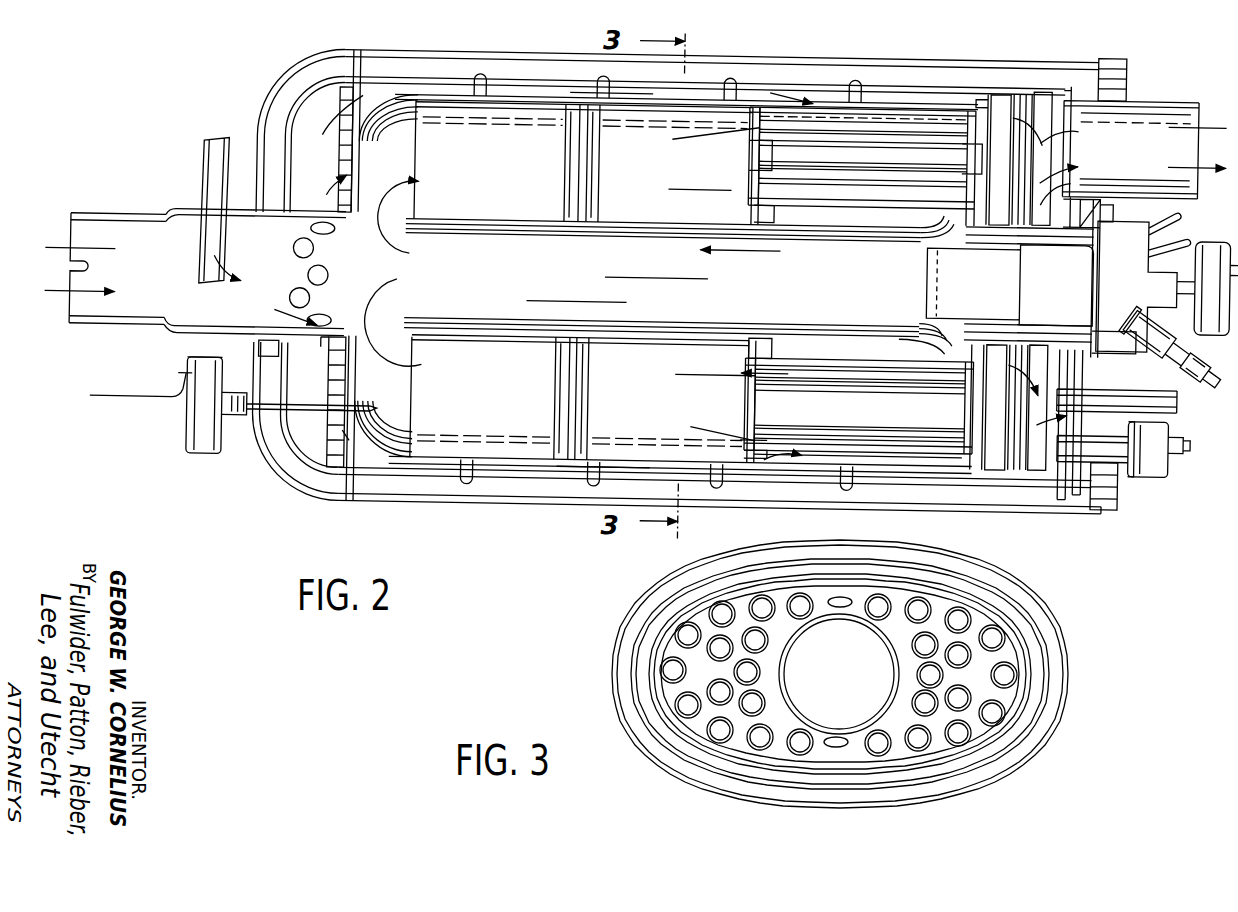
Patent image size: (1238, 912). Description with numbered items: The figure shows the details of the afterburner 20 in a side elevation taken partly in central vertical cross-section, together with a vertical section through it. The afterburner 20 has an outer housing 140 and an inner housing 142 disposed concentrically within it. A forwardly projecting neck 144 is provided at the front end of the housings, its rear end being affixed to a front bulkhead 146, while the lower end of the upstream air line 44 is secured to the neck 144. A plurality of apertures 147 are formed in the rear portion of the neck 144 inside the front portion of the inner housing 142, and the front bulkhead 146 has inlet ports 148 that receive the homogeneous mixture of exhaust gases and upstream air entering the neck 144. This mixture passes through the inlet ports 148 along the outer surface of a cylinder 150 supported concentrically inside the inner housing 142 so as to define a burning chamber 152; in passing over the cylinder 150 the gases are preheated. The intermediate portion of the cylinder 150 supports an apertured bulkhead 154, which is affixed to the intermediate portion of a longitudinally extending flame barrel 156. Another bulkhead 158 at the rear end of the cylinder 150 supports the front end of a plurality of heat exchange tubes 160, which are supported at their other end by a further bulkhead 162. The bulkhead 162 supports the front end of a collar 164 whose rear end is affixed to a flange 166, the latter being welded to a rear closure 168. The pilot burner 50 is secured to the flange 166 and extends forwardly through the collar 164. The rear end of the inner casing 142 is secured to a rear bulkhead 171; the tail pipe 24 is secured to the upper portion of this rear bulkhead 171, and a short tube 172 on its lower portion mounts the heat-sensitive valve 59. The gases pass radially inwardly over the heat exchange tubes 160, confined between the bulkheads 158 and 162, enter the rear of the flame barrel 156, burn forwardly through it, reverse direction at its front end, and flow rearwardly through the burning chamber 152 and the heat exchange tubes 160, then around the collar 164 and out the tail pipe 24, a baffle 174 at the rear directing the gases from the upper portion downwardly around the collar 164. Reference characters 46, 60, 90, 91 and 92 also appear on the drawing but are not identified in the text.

In FIG. 2, the afterburner 20 is at (322, 499).
In FIG. 2, the tail pipe 24 is at (1152, 100).
In FIG. 2, the upstream air line 44 is at (203, 163).
In FIG. 2, the fuel supply tube 46 is at (1178, 403).
In FIG. 2, the pilot burner 50 is at (925, 269).
In FIG. 2, the heat-sensitive valve 59 is at (1155, 453).
In FIG. 2, the spark plug 60 is at (1192, 356).
In FIG. 2, the thermostat lead 90 is at (103, 389).
In FIG. 2, the thermostat 91 is at (185, 426).
In FIG. 2, the fuel control valve 92 is at (1193, 266).
In FIG. 2, the outer housing 140 is at (506, 506).
In FIG. 3, the outer housing 140 is at (1035, 598).
In FIG. 2, the inner housing 142 is at (572, 480).
In FIG. 3, the inner housing 142 is at (1041, 669).
In FIG. 2, the neck 144 is at (170, 335).
In FIG. 2, the front bulkhead 146 is at (350, 293).
In FIG. 2, the apertures 147 is at (290, 299).
In FIG. 2, the inlet ports 148 is at (345, 441).
In FIG. 2, the cylinder 150 is at (432, 454).
In FIG. 3, the cylinder 150 is at (1023, 709).
In FIG. 2, the burning chamber 152 is at (585, 282).
In FIG. 3, the burning chamber 152 is at (986, 734).
In FIG. 2, the apertured bulkhead 154 is at (576, 447).
In FIG. 2, the flame barrel 156 is at (667, 341).
In FIG. 3, the flame barrel 156 is at (783, 671).
In FIG. 2, the bulkhead 158 is at (748, 406).
In FIG. 2, the heat exchange tubes 160 is at (873, 452).
In FIG. 3, the heat exchange tubes 160 is at (1004, 641).
In FIG. 2, the bulkhead 162 is at (975, 471).
In FIG. 2, the collar 164 is at (956, 336).
In FIG. 2, the flange 166 is at (1086, 200).
In FIG. 2, the rear closure 168 is at (1118, 498).
In FIG. 2, the rear bulkhead 171 is at (1062, 503).
In FIG. 2, the short tube 172 is at (1078, 498).
In FIG. 2, the baffle 174 is at (1050, 86).